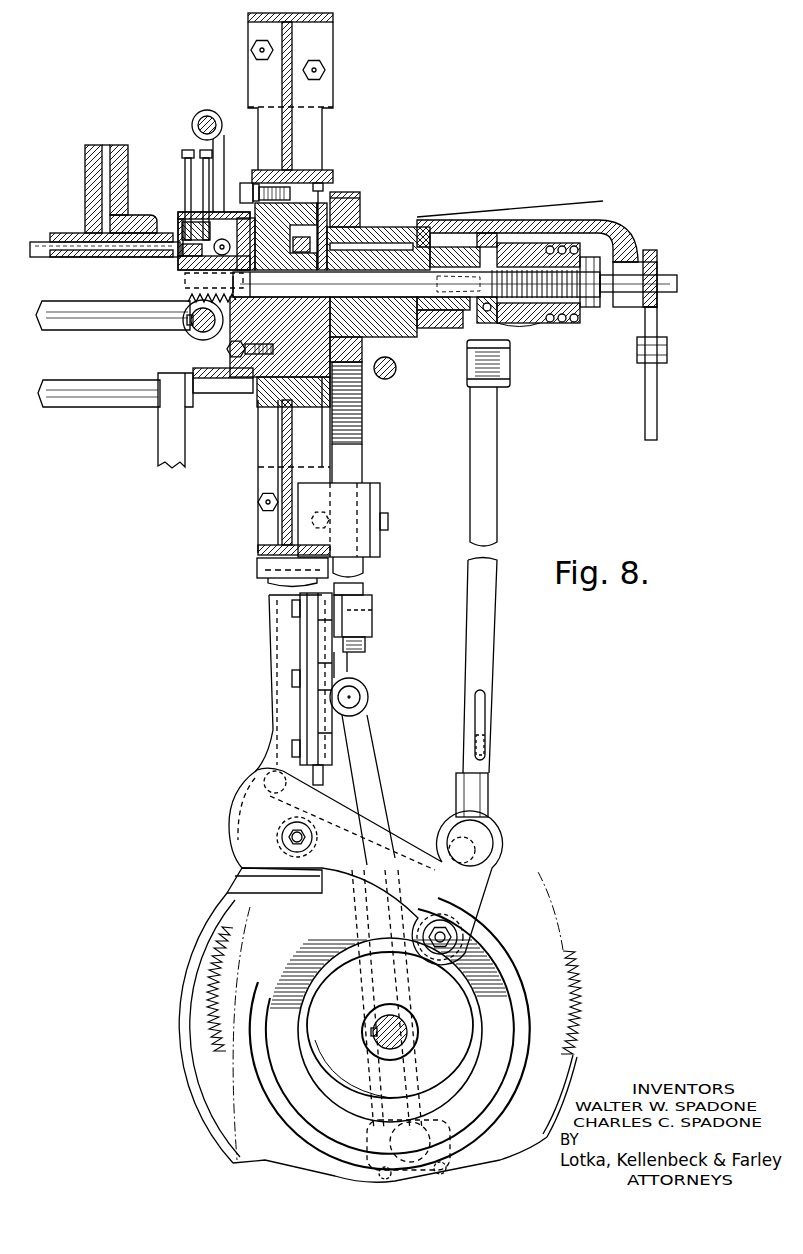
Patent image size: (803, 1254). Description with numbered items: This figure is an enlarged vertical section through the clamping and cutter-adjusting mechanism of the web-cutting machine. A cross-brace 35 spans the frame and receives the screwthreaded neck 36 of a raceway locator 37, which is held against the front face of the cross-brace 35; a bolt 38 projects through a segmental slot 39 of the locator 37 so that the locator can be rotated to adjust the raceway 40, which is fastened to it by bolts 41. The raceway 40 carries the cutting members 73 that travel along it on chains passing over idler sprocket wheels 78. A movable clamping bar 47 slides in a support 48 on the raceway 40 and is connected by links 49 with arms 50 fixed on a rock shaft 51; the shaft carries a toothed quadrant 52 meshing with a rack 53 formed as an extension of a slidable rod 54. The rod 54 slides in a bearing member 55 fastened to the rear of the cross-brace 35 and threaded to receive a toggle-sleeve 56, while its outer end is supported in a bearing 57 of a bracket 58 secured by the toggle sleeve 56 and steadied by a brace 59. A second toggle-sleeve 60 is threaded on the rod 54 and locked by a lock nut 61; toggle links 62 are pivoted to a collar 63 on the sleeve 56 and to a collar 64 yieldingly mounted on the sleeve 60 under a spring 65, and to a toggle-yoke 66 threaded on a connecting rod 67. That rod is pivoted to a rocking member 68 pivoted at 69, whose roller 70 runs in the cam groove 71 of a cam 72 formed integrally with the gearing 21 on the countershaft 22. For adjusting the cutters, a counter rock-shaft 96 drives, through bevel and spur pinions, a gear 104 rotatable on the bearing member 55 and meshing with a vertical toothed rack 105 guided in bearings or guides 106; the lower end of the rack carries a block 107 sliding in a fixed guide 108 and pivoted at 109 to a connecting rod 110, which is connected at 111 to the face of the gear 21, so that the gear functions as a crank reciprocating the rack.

The gearing 21 is at (547, 968).
The countershaft 22 is at (413, 1030).
The cross-brace 35 is at (296, 45).
The neck 36 is at (320, 200).
The raceway locator 37 is at (265, 172).
The bolt 38 is at (255, 189).
The segmental slot 39 is at (257, 184).
The raceway 40 is at (213, 378).
The bolts 41 is at (233, 378).
The clamping bar 47 is at (31, 250).
The support 48 is at (60, 233).
The links 49 is at (178, 273).
The arms 50 is at (180, 286).
The rock shaft 51 is at (205, 331).
The toothed quadrant 52 is at (200, 320).
The rack 53 is at (205, 298).
The slidable rod 54 is at (313, 287).
The bearing member 55 is at (377, 250).
The toggle-sleeve 56 is at (484, 244).
The bearing 57 is at (662, 262).
The bracket 58 is at (573, 222).
The brace 59 is at (657, 387).
The second toggle-sleeve 60 is at (543, 330).
The lock nut 61 is at (588, 309).
The toggle links 62 is at (480, 326).
The collar 63 is at (441, 330).
The collar 64 is at (530, 328).
The spring 65 is at (563, 328).
The toggle-yoke 66 is at (512, 343).
The connecting rod 67 is at (490, 507).
The rocking member 68 is at (395, 838).
The pivot 69 is at (306, 834).
The roller 70 is at (464, 950).
The cam groove 71 is at (275, 1003).
The cam 72 is at (514, 1017).
The cutting members 73 is at (175, 233).
The idler sprocket wheels 78 is at (184, 164).
The counter rock-shaft 96 is at (396, 375).
The gear 104 is at (344, 204).
The toothed rack 105 is at (353, 402).
The bearings or guides 106 is at (364, 510).
The block 107 is at (338, 663).
The fixed guide 108 is at (323, 707).
The pivot 109 is at (353, 698).
The connecting rod 110 is at (362, 767).
The connection 111 is at (427, 1130).